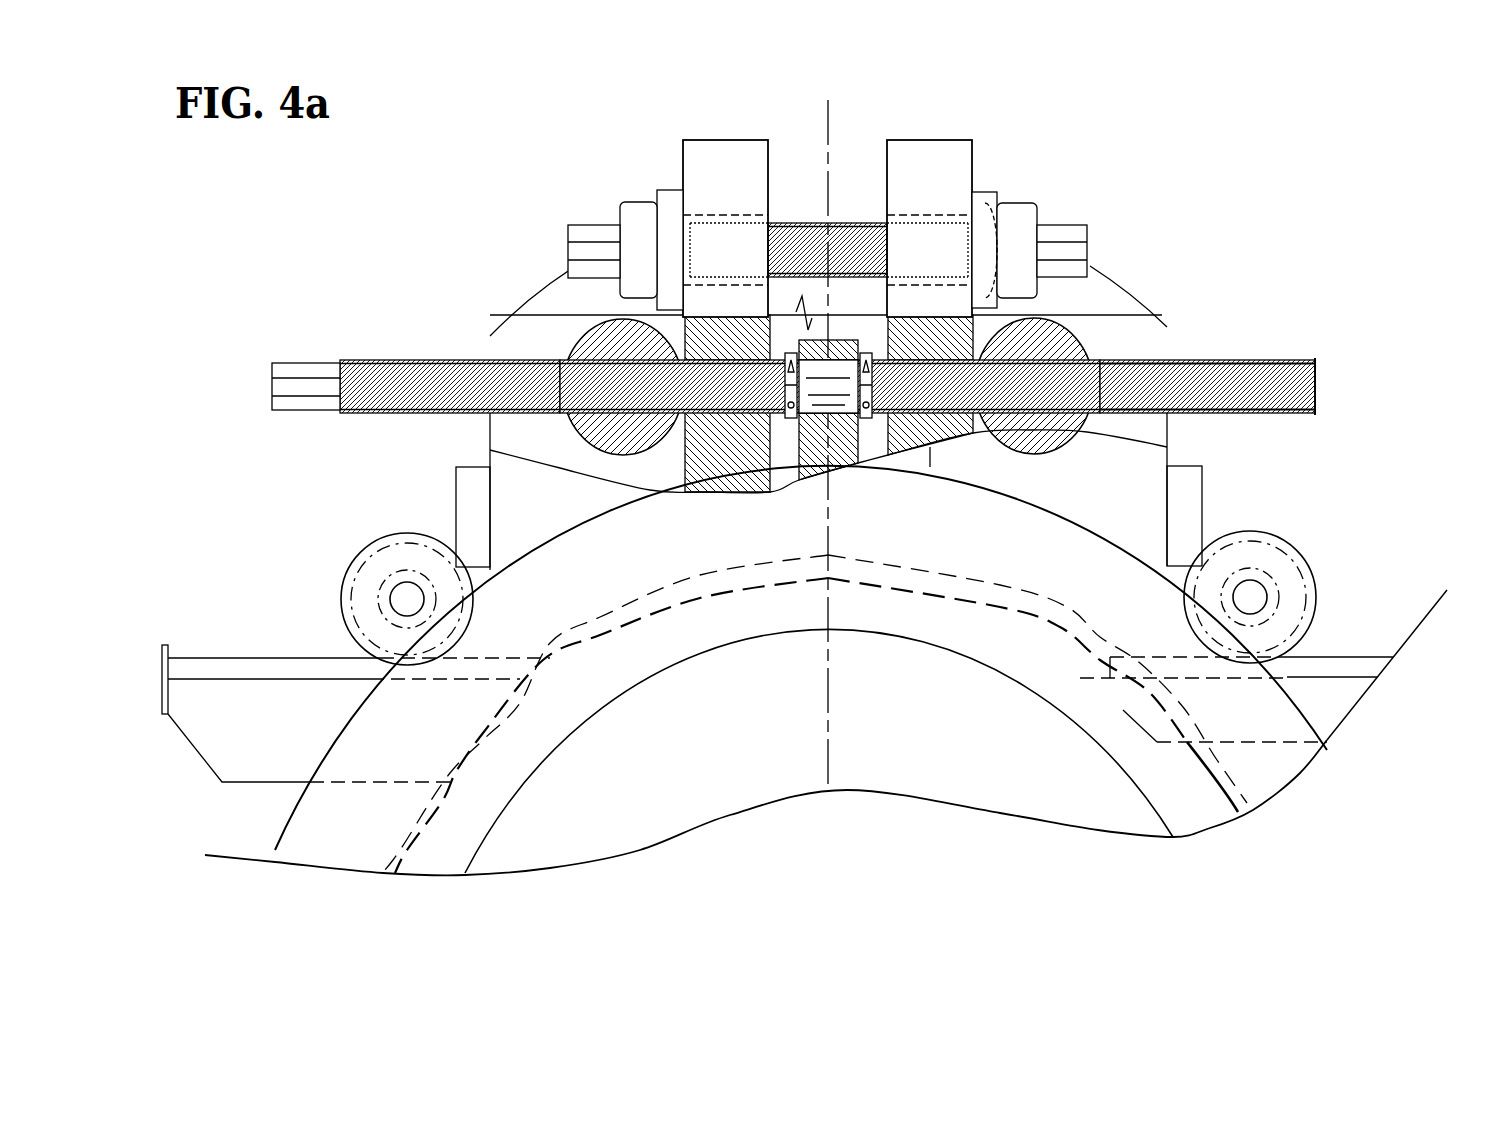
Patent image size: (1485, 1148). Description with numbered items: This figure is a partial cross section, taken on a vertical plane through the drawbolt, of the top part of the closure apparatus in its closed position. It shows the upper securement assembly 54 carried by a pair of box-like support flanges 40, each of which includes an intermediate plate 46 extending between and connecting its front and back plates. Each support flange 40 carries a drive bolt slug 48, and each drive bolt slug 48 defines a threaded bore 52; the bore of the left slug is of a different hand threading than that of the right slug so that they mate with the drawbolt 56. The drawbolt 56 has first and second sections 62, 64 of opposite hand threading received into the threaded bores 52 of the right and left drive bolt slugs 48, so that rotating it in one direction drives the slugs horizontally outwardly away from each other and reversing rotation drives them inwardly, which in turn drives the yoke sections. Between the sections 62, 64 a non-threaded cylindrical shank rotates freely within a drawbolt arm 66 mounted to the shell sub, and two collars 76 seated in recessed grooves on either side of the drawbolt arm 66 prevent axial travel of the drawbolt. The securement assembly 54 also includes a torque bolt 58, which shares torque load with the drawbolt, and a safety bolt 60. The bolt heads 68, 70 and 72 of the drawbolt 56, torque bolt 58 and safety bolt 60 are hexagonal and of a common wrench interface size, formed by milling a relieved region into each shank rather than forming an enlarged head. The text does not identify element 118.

The support flange 40 is at (678, 124).
The intermediate plate 46 is at (752, 155).
The drive bolt slug 48 is at (1065, 315).
The threaded bore 52 is at (575, 340).
The securement assembly 54 is at (1118, 243).
The drawbolt 56 is at (355, 426).
The torque bolt 58 is at (587, 200).
The safety bolt 60 is at (1070, 200).
The first threaded section 62 is at (352, 362).
The second threaded section 64 is at (1250, 400).
The drawbolt arm 66 is at (790, 352).
The bolt head 68 is at (290, 362).
The bolt head 70 is at (568, 242).
The bolt head 72 is at (1088, 242).
The collar 76 is at (866, 352).
The frame bracket 118 is at (597, 316).